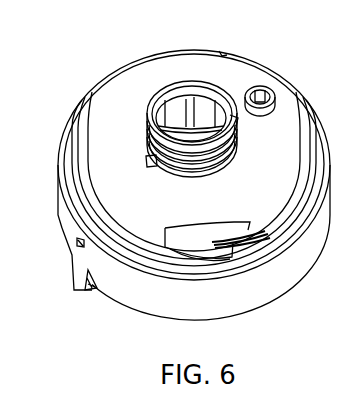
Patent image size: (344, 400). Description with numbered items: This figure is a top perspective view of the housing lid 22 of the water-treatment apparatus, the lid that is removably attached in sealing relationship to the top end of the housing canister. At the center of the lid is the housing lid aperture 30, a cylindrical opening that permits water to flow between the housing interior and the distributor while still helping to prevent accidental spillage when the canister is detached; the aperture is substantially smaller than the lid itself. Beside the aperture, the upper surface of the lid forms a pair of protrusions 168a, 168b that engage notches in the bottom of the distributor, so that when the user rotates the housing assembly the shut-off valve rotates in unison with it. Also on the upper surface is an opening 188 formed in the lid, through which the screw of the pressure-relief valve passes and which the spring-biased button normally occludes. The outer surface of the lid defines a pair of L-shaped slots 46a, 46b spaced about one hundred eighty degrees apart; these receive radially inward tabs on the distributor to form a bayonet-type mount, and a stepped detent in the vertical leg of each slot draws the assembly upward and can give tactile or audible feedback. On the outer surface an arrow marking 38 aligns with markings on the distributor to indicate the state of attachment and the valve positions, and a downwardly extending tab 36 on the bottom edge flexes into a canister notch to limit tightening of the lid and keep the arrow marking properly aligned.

The housing lid 22 is at (127, 65).
The L-shaped slot 46a is at (187, 53).
The L-shaped slot 46b is at (195, 233).
The housing lid aperture 30 is at (192, 129).
The protrusion 168a is at (147, 162).
The protrusion 168b is at (232, 120).
The opening 188 is at (271, 89).
The arrow marking 38 is at (78, 243).
The downwardly extending tab 36 is at (75, 280).